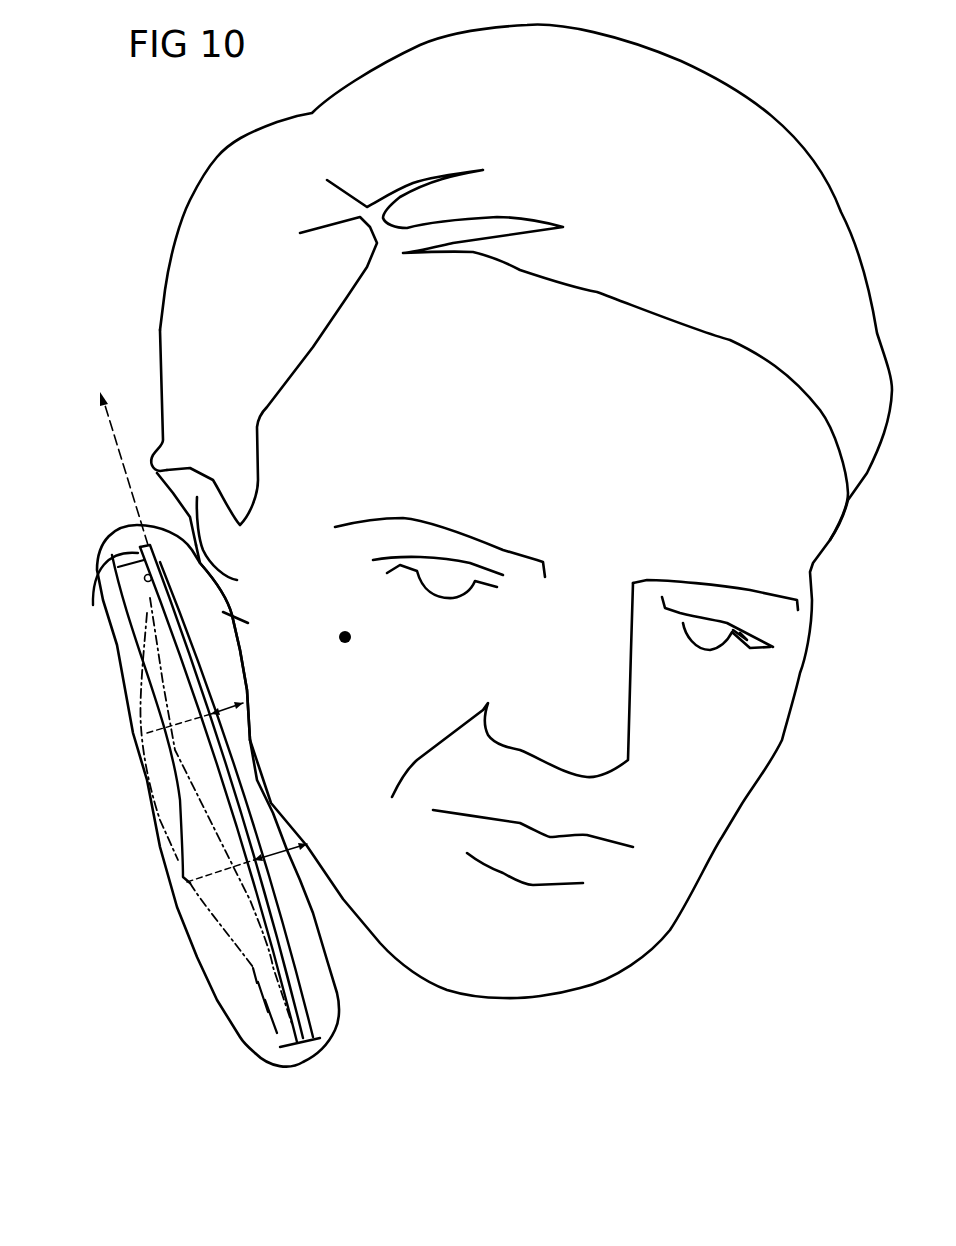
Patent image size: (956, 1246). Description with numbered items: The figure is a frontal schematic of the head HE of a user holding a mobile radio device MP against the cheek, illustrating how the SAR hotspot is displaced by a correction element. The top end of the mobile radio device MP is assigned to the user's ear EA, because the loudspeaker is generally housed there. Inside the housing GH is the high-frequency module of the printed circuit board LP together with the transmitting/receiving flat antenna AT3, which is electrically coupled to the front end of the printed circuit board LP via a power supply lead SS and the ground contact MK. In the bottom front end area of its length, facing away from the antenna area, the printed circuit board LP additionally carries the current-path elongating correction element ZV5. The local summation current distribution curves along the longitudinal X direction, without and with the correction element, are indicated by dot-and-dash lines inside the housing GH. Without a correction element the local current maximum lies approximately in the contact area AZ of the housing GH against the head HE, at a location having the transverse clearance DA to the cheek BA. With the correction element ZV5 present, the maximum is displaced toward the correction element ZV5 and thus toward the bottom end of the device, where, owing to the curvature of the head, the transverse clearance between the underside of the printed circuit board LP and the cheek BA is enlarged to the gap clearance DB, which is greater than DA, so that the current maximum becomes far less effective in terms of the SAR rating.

The head HE is at (220, 253).
The ear EA is at (160, 467).
The cheek BA is at (351, 637).
The contact area AZ is at (246, 680).
The mobile radio device MP is at (226, 714).
The housing GH is at (338, 1026).
The ground contact MK is at (108, 560).
The flat antenna AT3 is at (118, 600).
The printed circuit board LP is at (232, 794).
The power supply lead SS is at (152, 577).
The X direction X is at (117, 453).
The transverse clearance DA is at (226, 712).
The gap clearance DB is at (285, 852).
The current-path elongating correction element ZV5 is at (256, 988).